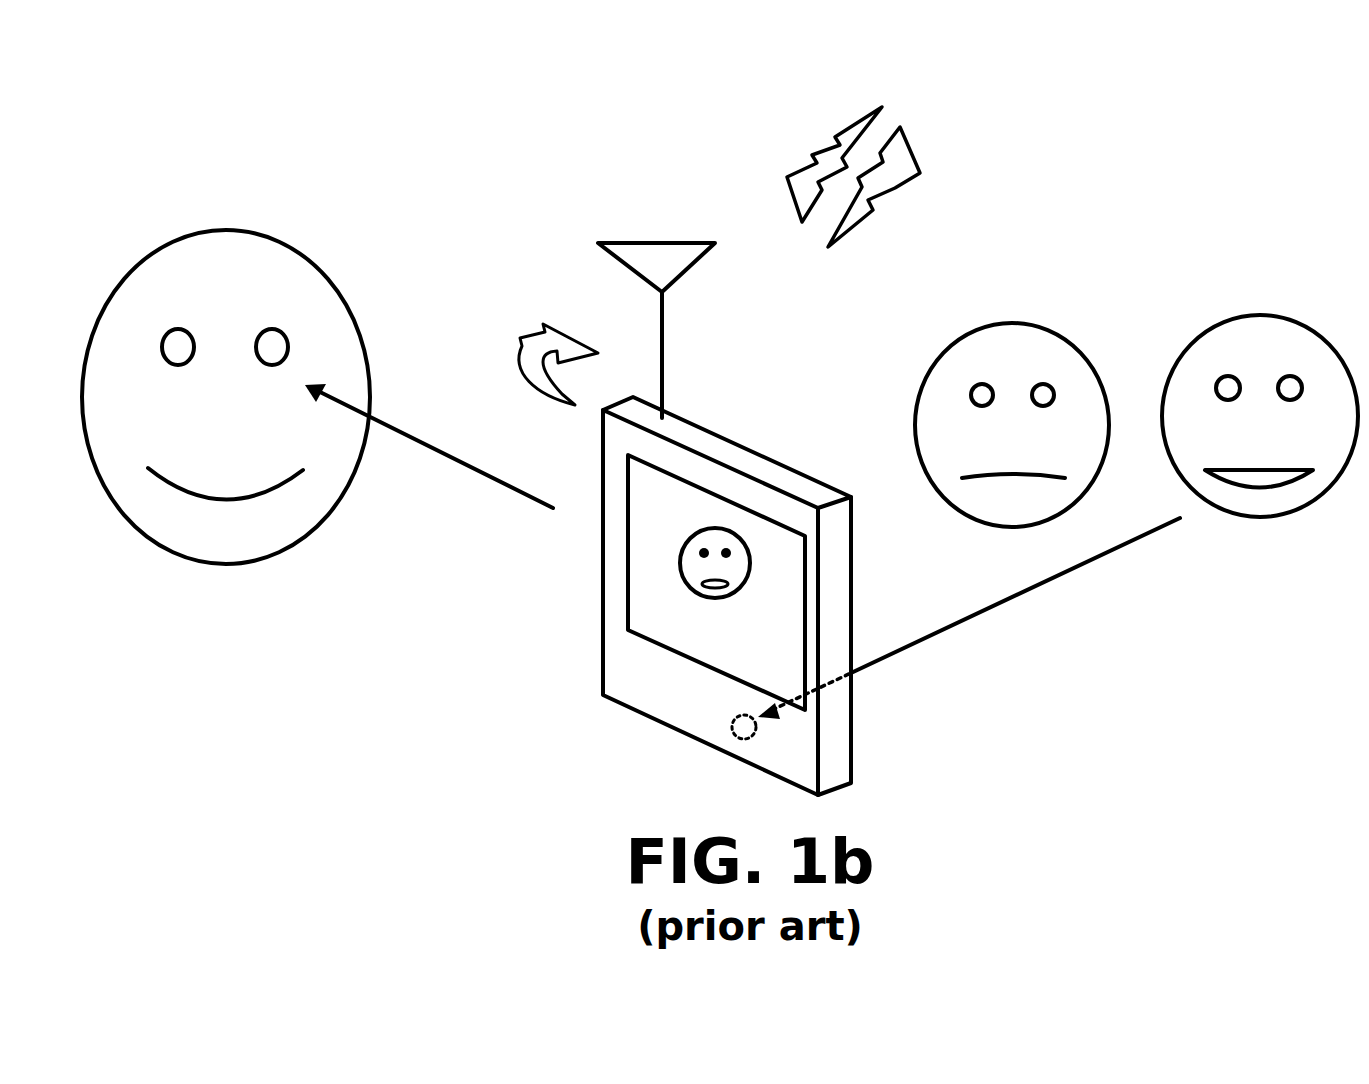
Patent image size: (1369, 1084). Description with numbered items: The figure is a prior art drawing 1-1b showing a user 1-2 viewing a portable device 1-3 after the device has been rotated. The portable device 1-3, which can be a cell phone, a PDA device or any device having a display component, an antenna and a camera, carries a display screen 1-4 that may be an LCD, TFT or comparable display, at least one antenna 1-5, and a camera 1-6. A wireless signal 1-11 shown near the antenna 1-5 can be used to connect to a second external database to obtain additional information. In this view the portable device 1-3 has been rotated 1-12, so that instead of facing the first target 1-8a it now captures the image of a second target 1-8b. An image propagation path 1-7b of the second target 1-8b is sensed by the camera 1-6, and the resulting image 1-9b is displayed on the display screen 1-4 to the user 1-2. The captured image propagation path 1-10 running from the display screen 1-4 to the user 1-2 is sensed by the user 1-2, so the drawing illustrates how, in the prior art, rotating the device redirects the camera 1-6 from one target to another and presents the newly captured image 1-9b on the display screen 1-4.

The prior art drawing 1-1b is at (405, 177).
The user 1-2 is at (225, 566).
The portable device 1-3 is at (855, 777).
The display screen 1-4 is at (648, 642).
The antenna 1-5 is at (663, 338).
The camera 1-6 is at (731, 728).
The image propagation path 1-7b is at (970, 612).
The first target 1-8a is at (1060, 335).
The second target 1-8b is at (1253, 517).
The image 1-9b is at (680, 563).
The captured image propagation path 1-10 is at (420, 438).
The wireless signal 1-11 is at (910, 180).
The rotation 1-12 is at (532, 334).